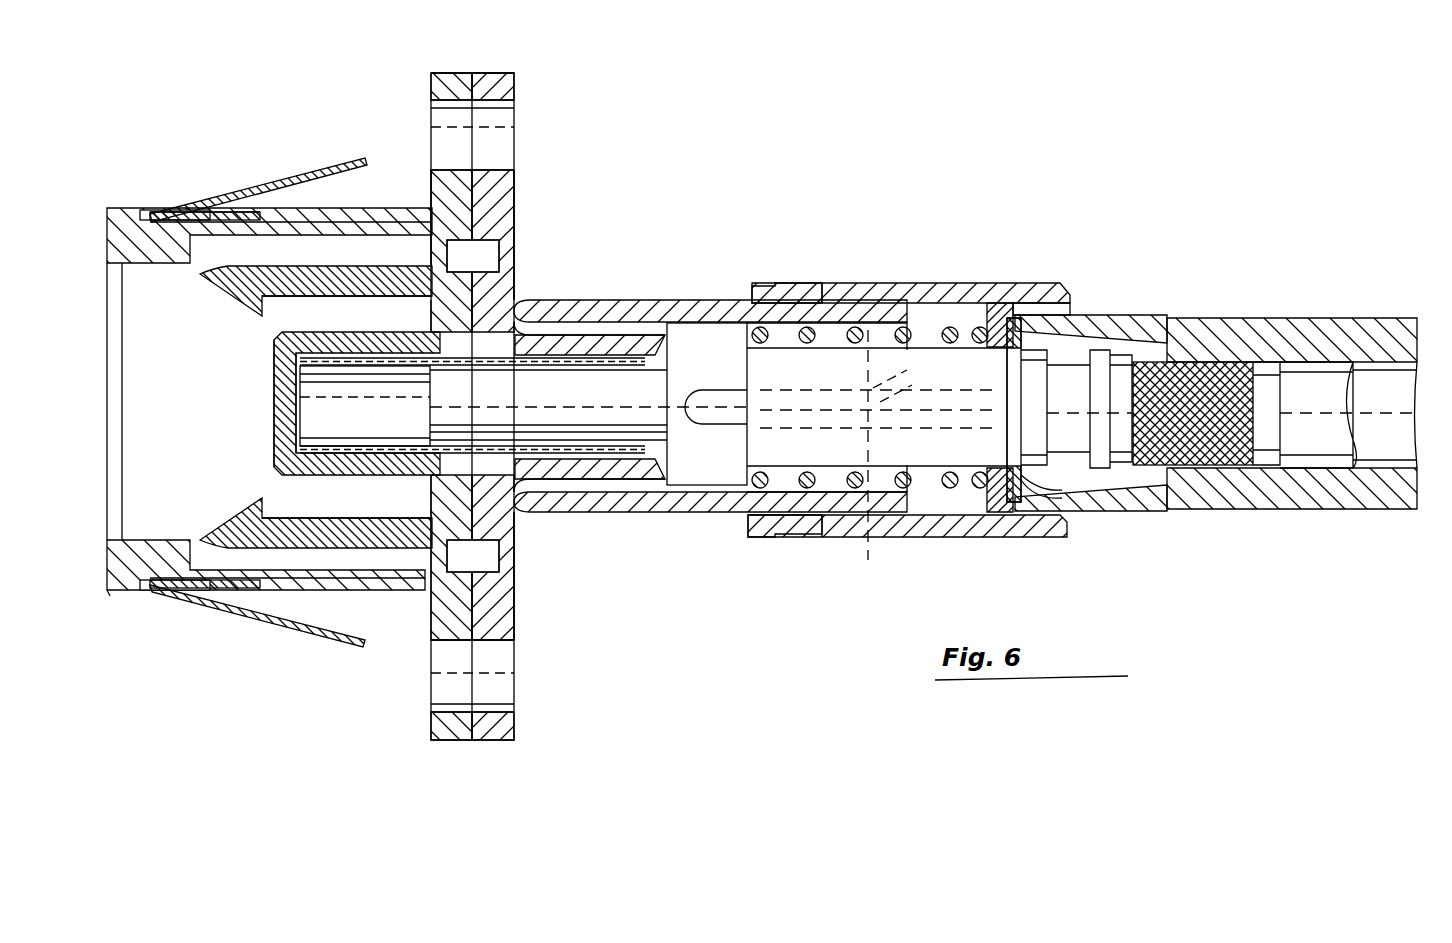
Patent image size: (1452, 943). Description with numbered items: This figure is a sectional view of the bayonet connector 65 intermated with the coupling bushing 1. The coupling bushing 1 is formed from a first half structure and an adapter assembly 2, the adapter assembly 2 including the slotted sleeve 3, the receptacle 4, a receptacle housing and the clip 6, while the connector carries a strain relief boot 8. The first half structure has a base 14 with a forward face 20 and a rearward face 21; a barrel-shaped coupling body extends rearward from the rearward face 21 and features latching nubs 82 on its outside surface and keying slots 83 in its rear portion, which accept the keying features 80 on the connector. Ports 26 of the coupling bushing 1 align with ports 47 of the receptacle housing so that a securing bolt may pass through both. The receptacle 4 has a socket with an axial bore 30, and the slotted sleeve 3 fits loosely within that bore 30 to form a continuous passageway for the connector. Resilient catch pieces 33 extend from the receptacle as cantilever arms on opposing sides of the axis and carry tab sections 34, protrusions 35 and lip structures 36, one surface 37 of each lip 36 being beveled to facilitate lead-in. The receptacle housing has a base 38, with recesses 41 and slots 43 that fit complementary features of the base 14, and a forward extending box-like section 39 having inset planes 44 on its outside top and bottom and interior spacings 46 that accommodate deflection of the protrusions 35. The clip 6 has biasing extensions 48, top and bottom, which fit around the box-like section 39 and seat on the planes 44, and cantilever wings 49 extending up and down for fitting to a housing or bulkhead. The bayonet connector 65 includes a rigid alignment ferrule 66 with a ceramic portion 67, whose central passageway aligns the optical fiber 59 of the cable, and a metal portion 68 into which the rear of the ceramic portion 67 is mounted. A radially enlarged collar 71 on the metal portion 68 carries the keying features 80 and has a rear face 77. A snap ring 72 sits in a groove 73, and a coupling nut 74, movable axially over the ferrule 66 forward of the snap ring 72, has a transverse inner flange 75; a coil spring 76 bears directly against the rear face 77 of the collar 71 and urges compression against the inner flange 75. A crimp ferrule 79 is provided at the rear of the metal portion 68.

The coupling bushing 1 is at (514, 182).
The adapter assembly 2 is at (428, 614).
The slotted sleeve 3 is at (310, 448).
The receptacle 4 is at (280, 482).
The clip 6 is at (176, 210).
The strain relief boot 8 is at (1322, 318).
The base 14 is at (514, 213).
The forward face 20 is at (474, 73).
The rearward face 21 is at (514, 612).
The ports 26 is at (514, 120).
The axial bore 30 is at (282, 380).
The resilient catch pieces 33 is at (372, 235).
The tab sections 34 is at (428, 300).
The protrusions 35 is at (218, 268).
The lip structures 36 is at (258, 320).
The beveled surface 37 is at (205, 290).
The base 38 is at (431, 195).
The forward extending box-like section 39 is at (112, 596).
The recesses 41 is at (446, 256).
The slots 43 is at (446, 560).
The inset planes 44 is at (356, 222).
The spacings 46 is at (320, 298).
The ports 47 is at (431, 112).
The biasing extensions 48 is at (158, 210).
The wings 49 is at (282, 192).
The optical fiber 59 is at (437, 412).
The bayonet connector 65 is at (1068, 292).
The alignment ferrule 66 is at (760, 514).
The ceramic portion 67 is at (557, 450).
The metal portion 68 is at (930, 538).
The collar 71 is at (688, 323).
The snap ring 72 is at (1044, 508).
The groove 73 is at (1032, 482).
The coupling nut 74 is at (1013, 300).
The inner flange 75 is at (975, 335).
The coil spring 76 is at (852, 328).
The rear face 77 is at (760, 326).
The crimp ferrule 79 is at (1185, 345).
The keying features 80 is at (703, 424).
The latching nubs 82 is at (797, 283).
The keying slots 83 is at (863, 463).